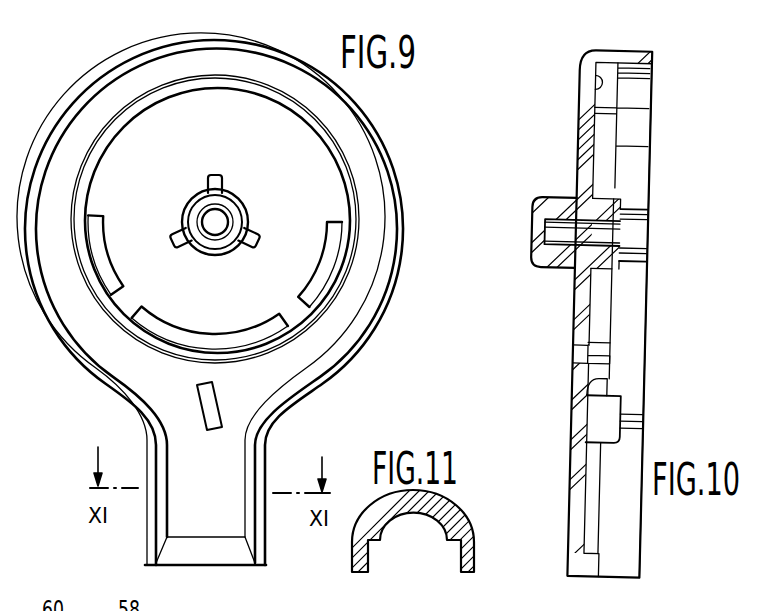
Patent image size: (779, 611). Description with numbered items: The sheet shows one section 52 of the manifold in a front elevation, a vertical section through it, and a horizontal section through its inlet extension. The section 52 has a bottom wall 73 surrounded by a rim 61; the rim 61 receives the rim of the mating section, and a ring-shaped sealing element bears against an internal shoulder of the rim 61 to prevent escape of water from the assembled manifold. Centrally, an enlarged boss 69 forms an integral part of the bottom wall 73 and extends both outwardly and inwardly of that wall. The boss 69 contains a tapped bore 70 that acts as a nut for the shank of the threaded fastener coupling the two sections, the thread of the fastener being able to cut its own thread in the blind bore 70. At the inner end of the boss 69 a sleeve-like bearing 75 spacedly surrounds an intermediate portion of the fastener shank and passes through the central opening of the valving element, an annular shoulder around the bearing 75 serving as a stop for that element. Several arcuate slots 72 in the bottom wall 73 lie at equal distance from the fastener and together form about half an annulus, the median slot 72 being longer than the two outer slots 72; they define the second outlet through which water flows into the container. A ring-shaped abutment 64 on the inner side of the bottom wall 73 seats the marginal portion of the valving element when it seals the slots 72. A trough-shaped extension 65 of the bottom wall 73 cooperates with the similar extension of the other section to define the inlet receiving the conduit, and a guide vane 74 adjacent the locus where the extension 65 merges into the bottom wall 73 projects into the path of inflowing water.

In FIG. 9, the section 52 is at (390, 321).
In FIG. 10, the section 52 is at (650, 308).
In FIG. 9, the rim 61 is at (362, 347).
In FIG. 10, the rim 61 is at (635, 48).
In FIG. 9, the ring-shaped abutment 64 is at (337, 173).
In FIG. 9, the arcuate slots 72 is at (273, 327).
In FIG. 10, the arcuate slots 72 is at (575, 352).
In FIG. 9, the guide vane 74 is at (213, 402).
In FIG. 11, the extension 65 is at (453, 500).
In FIG. 10, the boss 69 is at (545, 197).
In FIG. 10, the tapped bore 70 is at (560, 233).
In FIG. 10, the bottom wall 73 is at (572, 427).
In FIG. 10, the sleeve-like bearing 75 is at (630, 210).